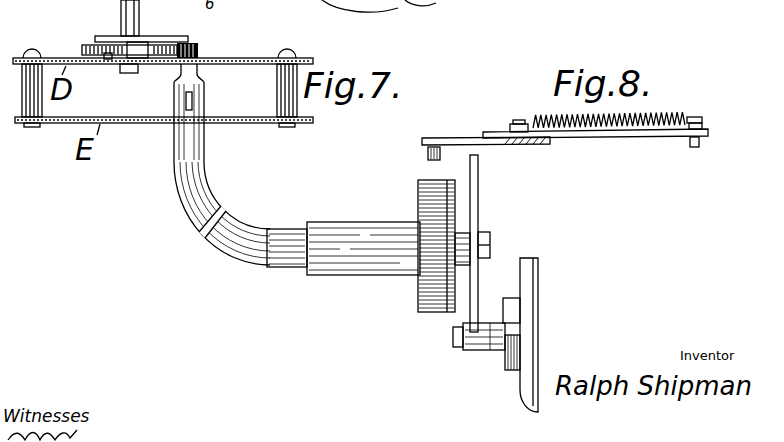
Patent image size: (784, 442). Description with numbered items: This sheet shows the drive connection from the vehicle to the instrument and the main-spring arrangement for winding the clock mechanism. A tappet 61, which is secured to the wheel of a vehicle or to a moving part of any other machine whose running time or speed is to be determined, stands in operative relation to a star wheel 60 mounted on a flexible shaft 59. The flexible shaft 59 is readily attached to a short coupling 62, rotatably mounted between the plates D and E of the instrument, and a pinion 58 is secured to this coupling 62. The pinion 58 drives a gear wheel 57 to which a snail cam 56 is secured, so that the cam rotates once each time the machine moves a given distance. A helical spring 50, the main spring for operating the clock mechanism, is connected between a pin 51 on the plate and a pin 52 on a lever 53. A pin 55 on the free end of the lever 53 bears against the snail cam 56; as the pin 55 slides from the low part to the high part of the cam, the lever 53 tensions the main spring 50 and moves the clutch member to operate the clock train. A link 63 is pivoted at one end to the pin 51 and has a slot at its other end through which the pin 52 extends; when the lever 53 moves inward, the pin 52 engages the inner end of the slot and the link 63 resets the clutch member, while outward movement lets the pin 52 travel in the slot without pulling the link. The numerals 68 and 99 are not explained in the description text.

In FIG. 8, the helical spring 50 is at (590, 88).
In FIG. 8, the pin 51 is at (698, 117).
In FIG. 8, the pin 52 is at (518, 120).
In FIG. 7, the lever 53 is at (424, 0).
In FIG. 8, the lever 53 is at (465, 138).
In FIG. 7, the pin 55 is at (329, 1).
In FIG. 8, the pin 55 is at (428, 153).
In FIG. 7, the snail cam 56 is at (170, 36).
In FIG. 7, the gear wheel 57 is at (83, 50).
In FIG. 7, the pinion 58 is at (200, 50).
In FIG. 7, the flexible shaft 59 is at (204, 163).
In FIG. 7, the star wheel 60 is at (480, 202).
In FIG. 7, the tappet 61 is at (477, 350).
In FIG. 7, the short coupling 62 is at (204, 95).
In FIG. 7, the link 63 is at (396, 0).
In FIG. 8, the link 63 is at (600, 136).
In FIG. 7, the lever 68 is at (496, 2).
In FIG. 7, the pin 99 is at (107, 60).